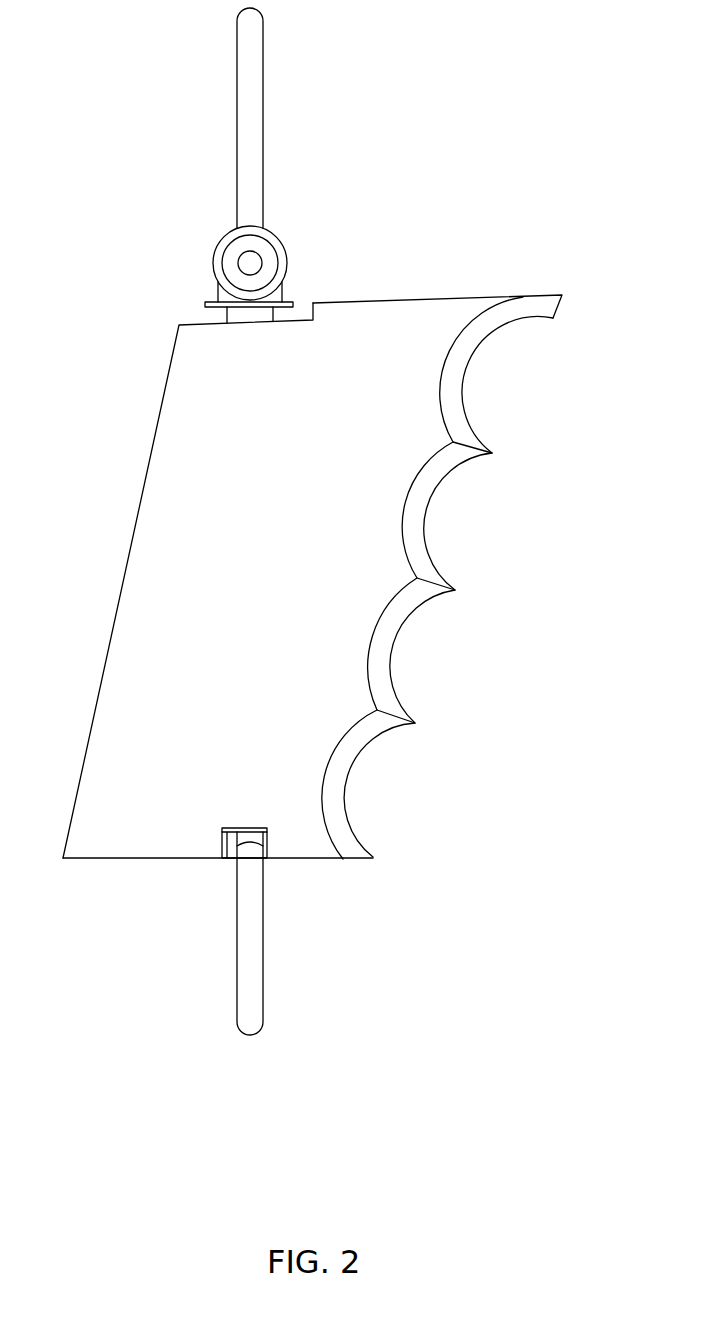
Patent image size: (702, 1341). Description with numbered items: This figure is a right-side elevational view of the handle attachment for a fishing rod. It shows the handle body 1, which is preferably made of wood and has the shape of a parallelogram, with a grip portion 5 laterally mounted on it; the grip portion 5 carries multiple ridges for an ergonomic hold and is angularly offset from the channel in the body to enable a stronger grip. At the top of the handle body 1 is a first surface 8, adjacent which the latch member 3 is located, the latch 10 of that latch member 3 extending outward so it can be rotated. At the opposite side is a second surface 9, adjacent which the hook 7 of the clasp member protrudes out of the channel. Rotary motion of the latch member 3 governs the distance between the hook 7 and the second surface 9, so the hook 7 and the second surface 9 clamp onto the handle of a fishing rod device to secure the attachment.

The handle body 1 is at (150, 562).
The latch member 3 is at (320, 142).
The grip portion 5 is at (512, 632).
The hook 7 is at (252, 1022).
The first surface 8 is at (440, 298).
The second surface 9 is at (107, 860).
The latch 10 is at (248, 153).